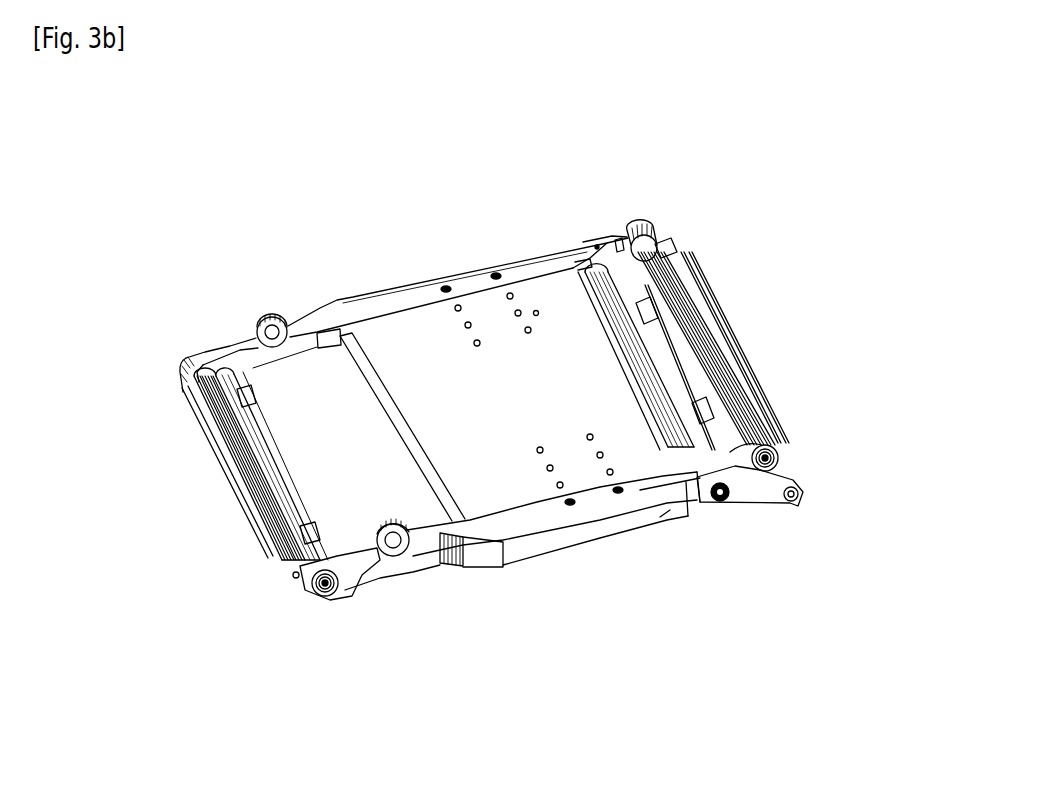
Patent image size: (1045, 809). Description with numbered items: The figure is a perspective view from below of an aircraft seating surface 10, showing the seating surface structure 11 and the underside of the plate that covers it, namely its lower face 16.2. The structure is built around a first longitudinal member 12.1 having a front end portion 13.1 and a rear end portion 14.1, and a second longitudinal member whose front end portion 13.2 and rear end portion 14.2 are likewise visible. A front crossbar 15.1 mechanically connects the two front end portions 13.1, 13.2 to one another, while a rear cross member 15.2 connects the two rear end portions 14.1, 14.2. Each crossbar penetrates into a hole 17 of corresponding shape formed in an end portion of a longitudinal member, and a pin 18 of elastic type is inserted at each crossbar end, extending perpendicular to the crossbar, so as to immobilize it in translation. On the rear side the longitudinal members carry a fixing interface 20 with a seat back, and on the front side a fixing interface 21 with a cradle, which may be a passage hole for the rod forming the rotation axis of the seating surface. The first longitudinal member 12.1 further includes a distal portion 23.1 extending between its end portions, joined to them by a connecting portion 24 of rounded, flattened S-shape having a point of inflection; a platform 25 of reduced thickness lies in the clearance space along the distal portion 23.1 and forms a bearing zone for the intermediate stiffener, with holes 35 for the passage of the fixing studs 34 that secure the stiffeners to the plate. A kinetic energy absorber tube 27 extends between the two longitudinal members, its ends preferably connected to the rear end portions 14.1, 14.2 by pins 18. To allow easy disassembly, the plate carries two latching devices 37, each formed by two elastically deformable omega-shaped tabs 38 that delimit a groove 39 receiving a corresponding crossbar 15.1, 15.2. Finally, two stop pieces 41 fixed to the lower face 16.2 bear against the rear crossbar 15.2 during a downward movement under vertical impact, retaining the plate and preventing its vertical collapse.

The aircraft seating surface 10 is at (240, 234).
The seating surface structure 11 is at (584, 236).
The first longitudinal member 12.1 is at (660, 520).
The front end portion 13.1 is at (360, 582).
The front end portion 13.2 is at (223, 352).
The rear end portion 14.1 is at (752, 498).
The rear end portion 14.2 is at (610, 247).
The front crossbar 15.1 is at (260, 477).
The rear cross member 15.2 is at (713, 356).
The lower face 16.2 is at (506, 478).
The hole 17 is at (780, 463).
The pin 18 is at (780, 455).
The fixing interface 20 is at (791, 500).
The fixing interface 21 is at (397, 552).
The distal portion 23.1 is at (512, 552).
The connecting portion 24 is at (690, 502).
The platform 25 is at (350, 302).
The kinetic energy absorber tube 27 is at (580, 267).
The fixing stud 34 is at (535, 312).
The hole 35 is at (495, 275).
The latching device 37 is at (688, 270).
The elastically deformable tab 38 is at (662, 236).
The groove 39 is at (667, 247).
The stop piece 41 is at (664, 308).